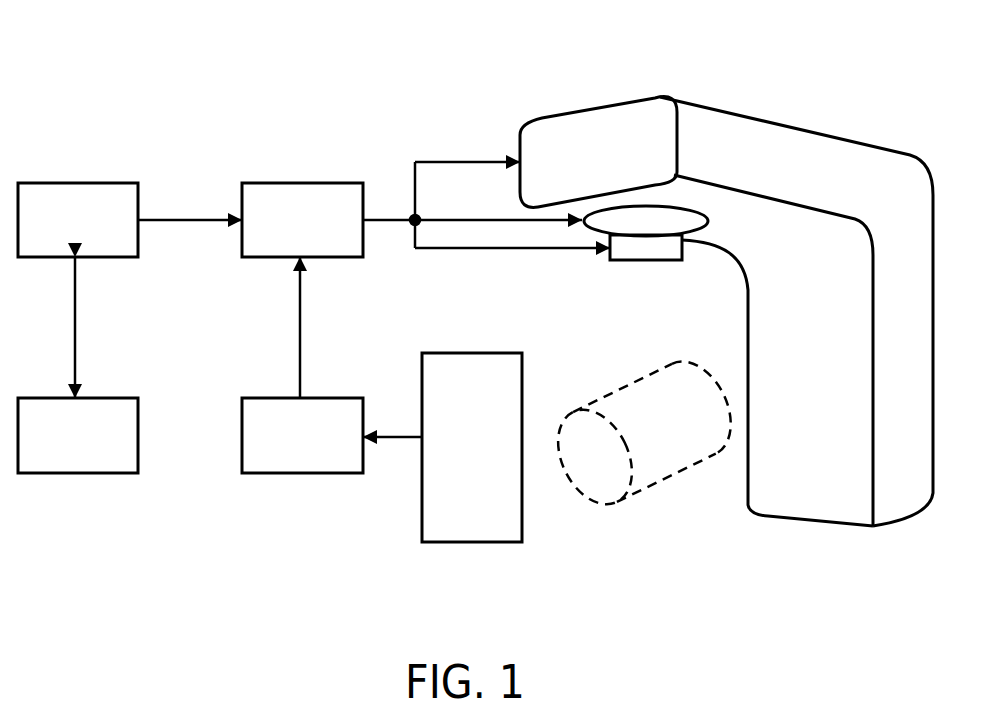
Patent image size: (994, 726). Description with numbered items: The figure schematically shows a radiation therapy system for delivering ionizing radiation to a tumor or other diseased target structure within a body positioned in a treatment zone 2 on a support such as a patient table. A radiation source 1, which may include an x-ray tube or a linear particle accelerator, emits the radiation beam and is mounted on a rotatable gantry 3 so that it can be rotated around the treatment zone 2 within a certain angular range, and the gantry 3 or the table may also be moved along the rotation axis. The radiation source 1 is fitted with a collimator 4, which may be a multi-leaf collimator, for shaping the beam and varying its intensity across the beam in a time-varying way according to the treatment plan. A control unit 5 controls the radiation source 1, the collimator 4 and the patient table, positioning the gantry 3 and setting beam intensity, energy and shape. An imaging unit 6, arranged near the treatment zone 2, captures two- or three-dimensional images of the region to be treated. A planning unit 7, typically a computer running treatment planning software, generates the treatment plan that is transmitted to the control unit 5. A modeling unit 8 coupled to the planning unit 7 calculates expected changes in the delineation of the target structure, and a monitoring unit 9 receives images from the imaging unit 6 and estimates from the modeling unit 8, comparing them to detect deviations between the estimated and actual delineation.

The radiation source 1 is at (693, 222).
The treatment zone 2 is at (662, 460).
The rotatable gantry 3 is at (749, 117).
The collimator 4 is at (635, 253).
The control unit 5 is at (302, 220).
The imaging unit 6 is at (452, 457).
The planning unit 7 is at (78, 220).
The modeling unit 8 is at (78, 435).
The monitoring unit 9 is at (302, 435).